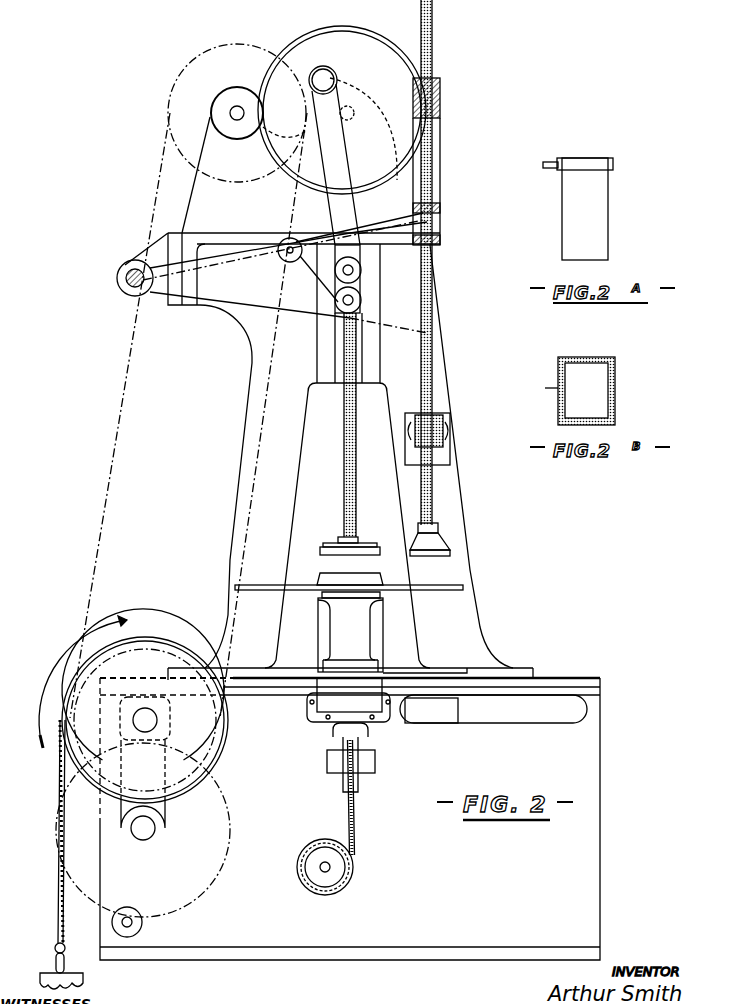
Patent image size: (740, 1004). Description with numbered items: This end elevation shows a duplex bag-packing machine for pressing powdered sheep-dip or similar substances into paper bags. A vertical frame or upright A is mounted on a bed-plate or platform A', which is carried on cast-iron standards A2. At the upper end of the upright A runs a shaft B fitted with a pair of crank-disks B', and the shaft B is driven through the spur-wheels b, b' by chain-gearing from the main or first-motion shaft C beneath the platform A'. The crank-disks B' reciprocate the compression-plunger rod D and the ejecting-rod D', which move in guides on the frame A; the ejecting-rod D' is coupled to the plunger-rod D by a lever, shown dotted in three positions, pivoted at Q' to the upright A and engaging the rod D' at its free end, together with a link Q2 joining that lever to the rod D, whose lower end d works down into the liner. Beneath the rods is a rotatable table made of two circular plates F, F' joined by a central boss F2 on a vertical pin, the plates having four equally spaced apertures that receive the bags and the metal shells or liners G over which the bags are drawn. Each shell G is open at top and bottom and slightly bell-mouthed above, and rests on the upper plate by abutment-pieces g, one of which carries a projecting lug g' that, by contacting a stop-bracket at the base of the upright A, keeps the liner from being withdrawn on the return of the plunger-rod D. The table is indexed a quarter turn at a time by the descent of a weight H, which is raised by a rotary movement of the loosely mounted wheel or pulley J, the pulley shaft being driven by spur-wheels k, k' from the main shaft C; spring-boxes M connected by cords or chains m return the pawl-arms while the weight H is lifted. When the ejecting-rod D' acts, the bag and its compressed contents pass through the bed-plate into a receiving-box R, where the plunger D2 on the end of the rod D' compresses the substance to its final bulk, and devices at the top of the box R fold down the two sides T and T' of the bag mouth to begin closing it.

In FIG. 2, the frame or upright A is at (340, 392).
In FIG. 2, the bed-plate or platform A' is at (563, 665).
In FIG. 2, the standard A2 is at (606, 766).
In FIG. 2, the spur-wheel b is at (237, 105).
In FIG. 2, the shaft B is at (363, 129).
In FIG. 2, the crank-disk B' is at (342, 100).
In FIG. 2, the spur-wheel b' is at (329, 61).
In FIG. 2, the main or first-motion shaft C is at (145, 723).
In FIG. 2, the compression-plunger rod D is at (368, 425).
In FIG. 2, the ejecting-rod D' is at (434, 262).
In FIG. 2, the plunger D2 is at (440, 545).
In FIG. 2, the presser plate d is at (363, 548).
In FIG. 2, the circular plate F is at (425, 663).
In FIG. 2, the circular plate F' is at (349, 578).
In FIG. 2, the central boss F2 is at (357, 627).
In FIG. 2, the shell or metal liner G is at (372, 580).
In FIG. 2A, the shell or metal liner G is at (598, 247).
In FIG. 2B, the shell or metal liner G is at (615, 395).
In FIG. 2A, the abutment-piece g is at (587, 173).
In FIG. 2A, the projecting lug g' is at (545, 181).
In FIG. 2B, the projecting lug g' is at (546, 378).
In FIG. 2, the weight H is at (70, 973).
In FIG. 2, the wheel or pulley J is at (49, 831).
In FIG. 2, the spur-wheel k is at (159, 718).
In FIG. 2, the spur-wheel k' is at (155, 773).
In FIG. 2, the spring-box M is at (332, 867).
In FIG. 2, the cord or chain m is at (362, 815).
In FIG. 2, the pivot of lever Q' is at (269, 276).
In FIG. 2, the link Q2 is at (310, 268).
In FIG. 2, the receiving-box R is at (450, 712).
In FIG. 2, the side of bag T is at (350, 661).
In FIG. 2, the side of bag T' is at (307, 627).